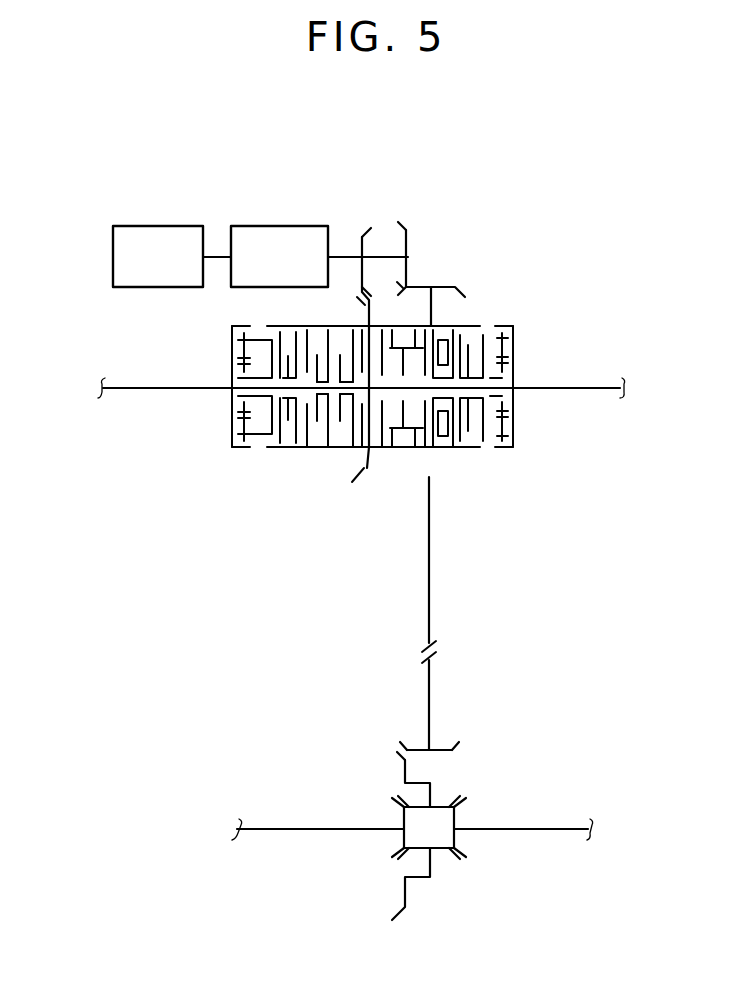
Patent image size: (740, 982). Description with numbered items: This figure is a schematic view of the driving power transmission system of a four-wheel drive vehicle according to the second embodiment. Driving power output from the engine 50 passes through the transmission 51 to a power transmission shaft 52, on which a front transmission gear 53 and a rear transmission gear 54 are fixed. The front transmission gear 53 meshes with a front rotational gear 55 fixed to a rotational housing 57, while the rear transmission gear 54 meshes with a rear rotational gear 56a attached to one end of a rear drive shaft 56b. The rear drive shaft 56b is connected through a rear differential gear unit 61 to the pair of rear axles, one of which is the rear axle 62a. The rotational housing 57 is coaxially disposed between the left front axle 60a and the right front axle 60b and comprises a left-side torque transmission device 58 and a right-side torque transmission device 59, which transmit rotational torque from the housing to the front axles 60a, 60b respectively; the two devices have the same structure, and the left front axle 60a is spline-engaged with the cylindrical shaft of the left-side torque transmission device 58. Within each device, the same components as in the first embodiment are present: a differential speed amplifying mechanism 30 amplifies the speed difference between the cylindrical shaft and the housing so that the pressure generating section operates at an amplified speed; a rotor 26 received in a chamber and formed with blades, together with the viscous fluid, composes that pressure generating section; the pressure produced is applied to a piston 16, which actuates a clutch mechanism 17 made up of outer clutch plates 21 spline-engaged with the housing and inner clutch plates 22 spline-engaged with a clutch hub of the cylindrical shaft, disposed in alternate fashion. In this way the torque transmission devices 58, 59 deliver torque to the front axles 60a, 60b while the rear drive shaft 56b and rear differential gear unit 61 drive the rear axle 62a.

The piston 16 is at (281, 448).
The clutch mechanism 17 is at (328, 465).
The outer clutch plates 21 is at (307, 448).
The inner clutch plates 22 is at (298, 448).
The rotor 26 is at (270, 446).
The differential speed amplifying mechanism 30 is at (216, 422).
The engine 50 is at (160, 226).
The transmission 51 is at (273, 226).
The power transmission shaft 52 is at (346, 253).
The front transmission gear 53 is at (367, 240).
The rear transmission gear 54 is at (412, 242).
The front rotational gear 55 is at (366, 450).
The rear rotational gear 56a is at (457, 287).
The rear drive shaft 56b is at (430, 563).
The rotational housing 57 is at (342, 448).
The left-side torque transmission device 58 is at (268, 312).
The right-side torque transmission device 59 is at (412, 322).
The left front axle 60a is at (140, 388).
The right front axle 60b is at (592, 387).
The rear differential gear unit 61 is at (443, 853).
The rear axle 62a is at (290, 829).